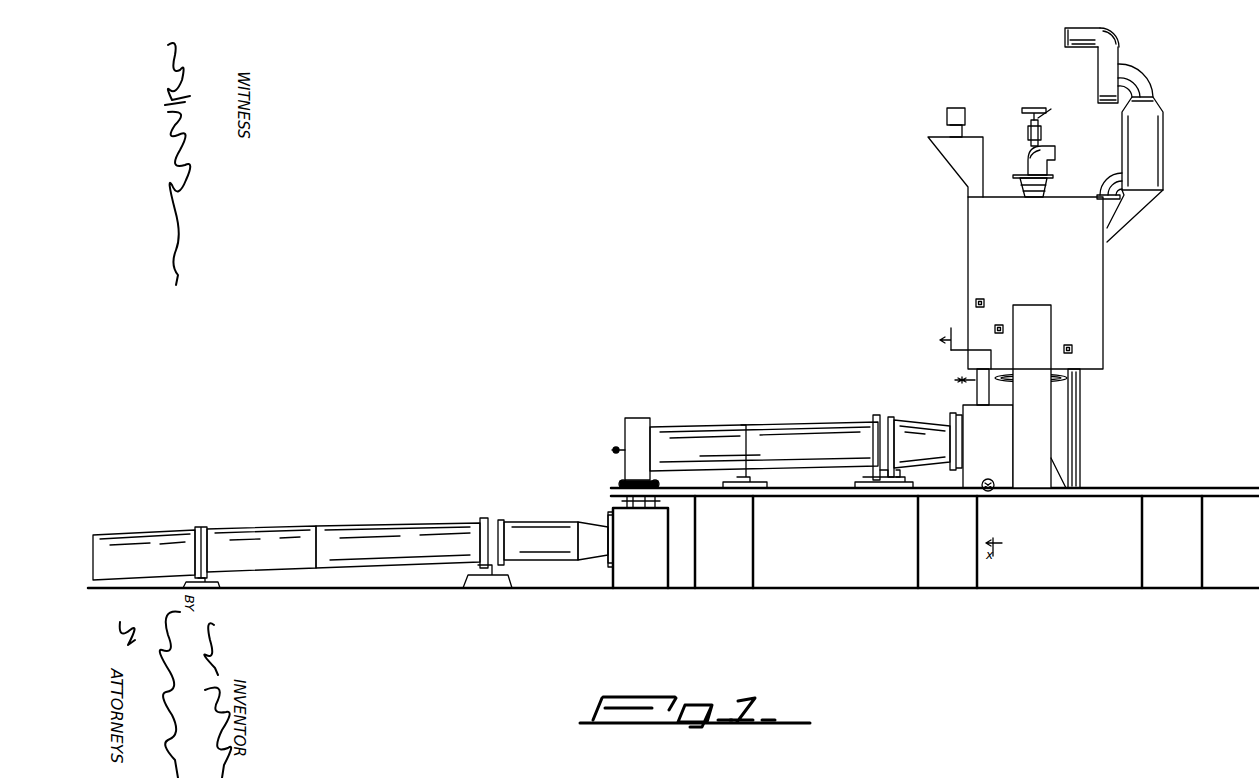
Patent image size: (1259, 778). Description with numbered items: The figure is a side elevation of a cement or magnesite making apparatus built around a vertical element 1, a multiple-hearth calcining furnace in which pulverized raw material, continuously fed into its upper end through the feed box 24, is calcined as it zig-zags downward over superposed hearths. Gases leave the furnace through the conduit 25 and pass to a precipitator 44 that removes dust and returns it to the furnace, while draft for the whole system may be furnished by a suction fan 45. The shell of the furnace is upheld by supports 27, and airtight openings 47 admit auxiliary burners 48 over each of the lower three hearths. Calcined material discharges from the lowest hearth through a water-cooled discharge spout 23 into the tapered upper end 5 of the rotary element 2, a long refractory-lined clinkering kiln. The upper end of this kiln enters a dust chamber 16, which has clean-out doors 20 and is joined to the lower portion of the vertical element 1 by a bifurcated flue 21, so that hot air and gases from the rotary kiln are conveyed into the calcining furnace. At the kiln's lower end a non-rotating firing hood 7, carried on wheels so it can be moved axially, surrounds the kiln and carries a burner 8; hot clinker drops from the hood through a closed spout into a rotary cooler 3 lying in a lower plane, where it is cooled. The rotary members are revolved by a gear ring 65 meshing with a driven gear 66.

The vertical element 1 is at (1078, 288).
The rotary element 2 is at (790, 426).
The rotary cooler 3 is at (378, 538).
The tapered upper end 5 is at (940, 410).
The firing hood 7 is at (639, 418).
The burner 8 is at (612, 450).
The dust chamber 16 is at (988, 446).
The clean-out doors 20 is at (990, 492).
The bifurcated flue 21 is at (1030, 446).
The water-cooled discharge spout 23 is at (965, 384).
The feed box 24 is at (960, 168).
The conduit 25 is at (1107, 186).
The supports 27 is at (1068, 472).
The precipitator 44 is at (1145, 177).
The suction fan 45 is at (1107, 68).
The airtight openings 47 is at (1075, 349).
The burners 48 is at (1001, 324).
The gear ring 65 is at (875, 420).
The driven gear 66 is at (862, 478).